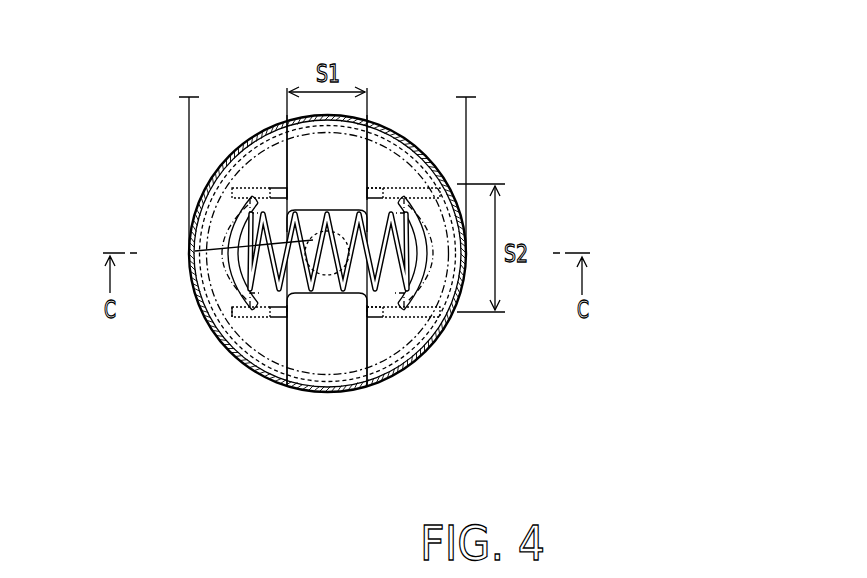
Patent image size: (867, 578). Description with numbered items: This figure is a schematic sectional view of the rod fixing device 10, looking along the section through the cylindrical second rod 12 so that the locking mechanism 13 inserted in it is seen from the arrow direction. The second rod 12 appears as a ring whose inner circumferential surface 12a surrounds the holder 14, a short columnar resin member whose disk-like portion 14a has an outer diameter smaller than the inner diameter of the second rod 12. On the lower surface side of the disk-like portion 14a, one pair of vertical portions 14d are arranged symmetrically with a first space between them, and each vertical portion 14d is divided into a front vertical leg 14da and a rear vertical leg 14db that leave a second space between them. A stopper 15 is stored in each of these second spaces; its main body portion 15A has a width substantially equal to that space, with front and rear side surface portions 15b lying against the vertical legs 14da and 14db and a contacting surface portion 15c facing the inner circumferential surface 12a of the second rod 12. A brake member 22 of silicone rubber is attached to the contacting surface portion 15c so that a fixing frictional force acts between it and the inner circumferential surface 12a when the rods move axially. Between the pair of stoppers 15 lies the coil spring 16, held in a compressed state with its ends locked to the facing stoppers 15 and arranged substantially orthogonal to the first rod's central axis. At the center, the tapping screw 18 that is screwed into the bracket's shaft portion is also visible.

The rod fixing device 10 is at (442, 127).
The second rod 12 is at (255, 367).
The inner circumferential surface 12a is at (195, 222).
The locking mechanism 13 is at (425, 160).
The holder 14 is at (325, 370).
The disk-like portion 14a is at (327, 261).
The vertical portions 14d is at (293, 245).
The front vertical leg 14da is at (248, 175).
The rear vertical leg 14db is at (262, 365).
The stopper 15 is at (240, 290).
The main body portion 15A is at (327, 290).
The front and rear side surface portions 15b is at (261, 188).
The contacting surface portion 15c is at (222, 232).
The coil spring 16 is at (272, 343).
The tapping screw 18 is at (195, 251).
The brake member 22 is at (233, 213).